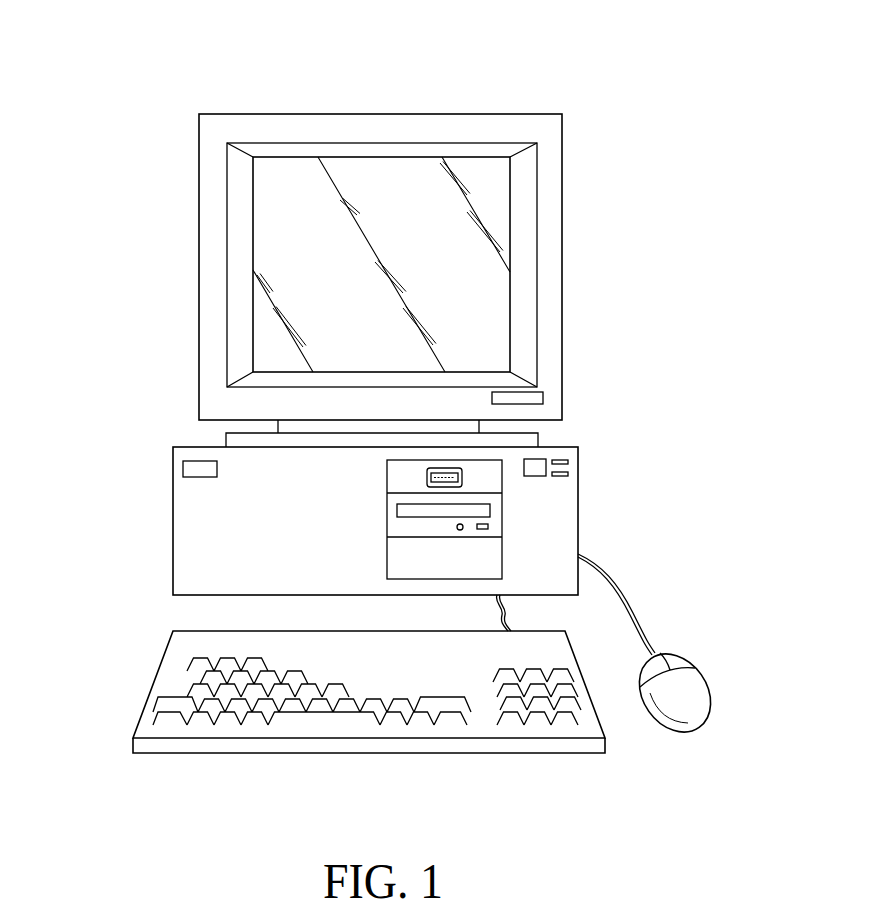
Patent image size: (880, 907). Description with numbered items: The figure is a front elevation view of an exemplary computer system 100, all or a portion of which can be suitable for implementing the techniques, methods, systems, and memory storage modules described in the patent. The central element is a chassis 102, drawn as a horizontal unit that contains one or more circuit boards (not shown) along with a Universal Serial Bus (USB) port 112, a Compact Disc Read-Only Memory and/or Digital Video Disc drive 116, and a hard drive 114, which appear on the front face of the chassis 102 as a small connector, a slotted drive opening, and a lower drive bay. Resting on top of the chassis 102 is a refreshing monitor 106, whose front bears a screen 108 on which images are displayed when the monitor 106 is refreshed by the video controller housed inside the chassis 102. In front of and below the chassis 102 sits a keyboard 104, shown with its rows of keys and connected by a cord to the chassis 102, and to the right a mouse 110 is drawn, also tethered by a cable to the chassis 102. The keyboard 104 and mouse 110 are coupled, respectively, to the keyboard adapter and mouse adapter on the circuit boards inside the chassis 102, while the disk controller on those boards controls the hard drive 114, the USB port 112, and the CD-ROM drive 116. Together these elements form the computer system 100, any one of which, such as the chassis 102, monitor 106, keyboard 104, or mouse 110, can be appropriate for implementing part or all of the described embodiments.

The computer system 100 is at (557, 88).
The chassis 102 is at (173, 522).
The keyboard 104 is at (155, 680).
The refreshing monitor 106 is at (272, 113).
The screen 108 is at (300, 268).
The mouse 110 is at (693, 683).
The Universal Serial Bus (USB) port 112 is at (462, 473).
The hard drive 114 is at (492, 557).
The Compact Disc Read-Only Memory (CD-ROM) and/or Digital Video Disc (DVD) drive 116 is at (492, 517).